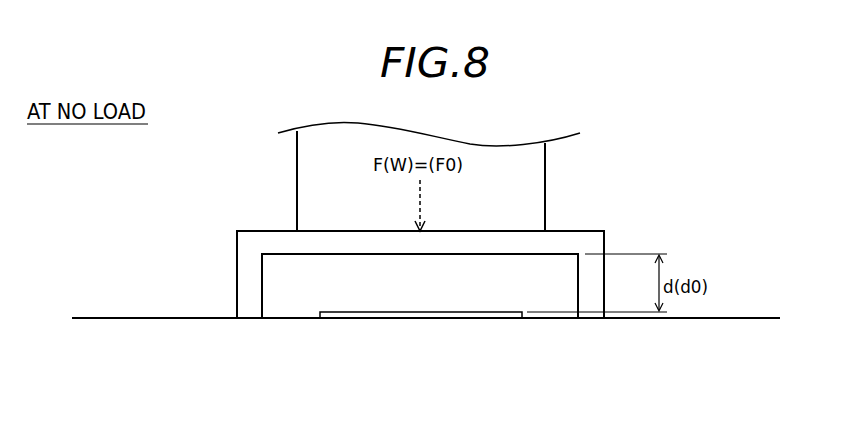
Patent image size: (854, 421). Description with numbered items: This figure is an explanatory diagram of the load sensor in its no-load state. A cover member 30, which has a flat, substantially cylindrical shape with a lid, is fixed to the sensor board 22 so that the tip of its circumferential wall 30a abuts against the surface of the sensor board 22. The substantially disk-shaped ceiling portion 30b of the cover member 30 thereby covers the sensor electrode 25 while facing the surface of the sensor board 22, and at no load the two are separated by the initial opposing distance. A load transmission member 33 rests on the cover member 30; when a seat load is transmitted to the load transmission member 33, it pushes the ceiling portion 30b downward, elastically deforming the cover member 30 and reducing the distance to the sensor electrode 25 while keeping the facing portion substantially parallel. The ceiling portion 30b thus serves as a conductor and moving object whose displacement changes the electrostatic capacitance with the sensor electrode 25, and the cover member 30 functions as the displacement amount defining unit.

The load transmission member 33 is at (297, 178).
The cover member 30 is at (604, 231).
The circumferential wall 30a is at (237, 282).
The ceiling portion 30b is at (402, 248).
The sensor electrode 25 is at (481, 314).
The sensor board 22 is at (141, 318).